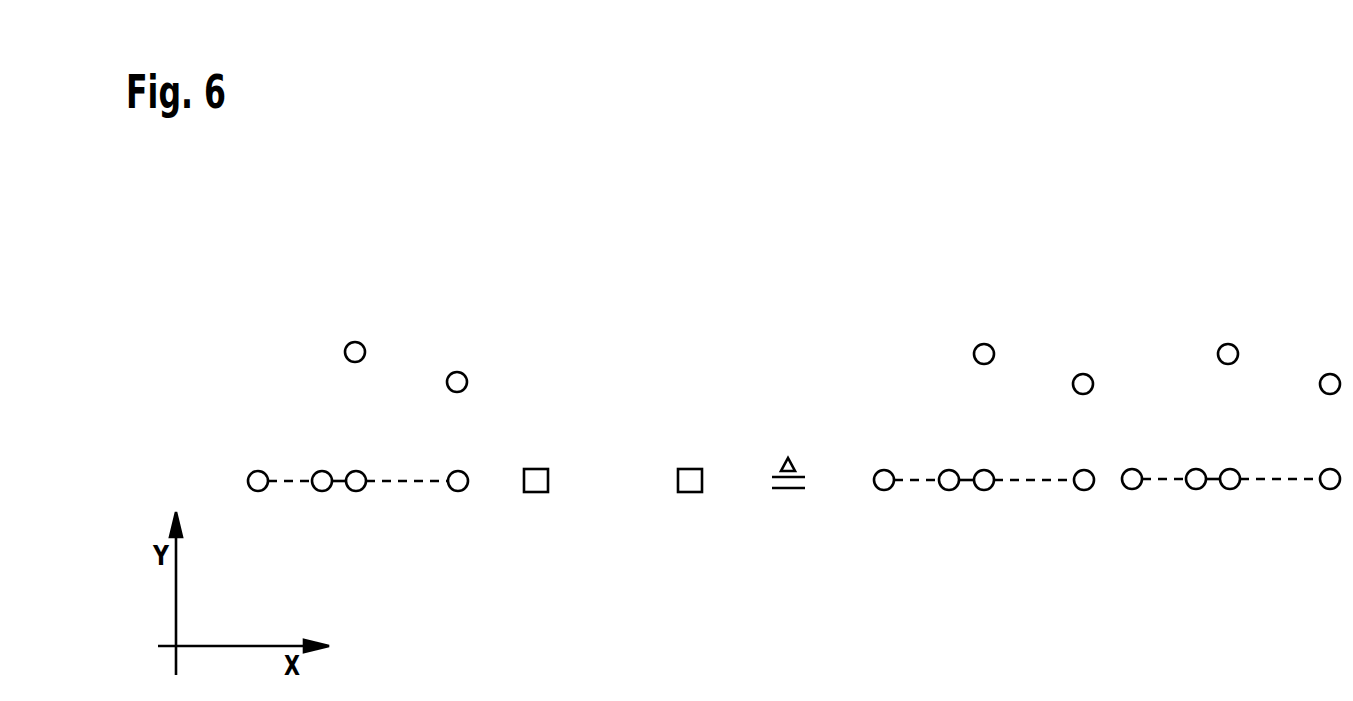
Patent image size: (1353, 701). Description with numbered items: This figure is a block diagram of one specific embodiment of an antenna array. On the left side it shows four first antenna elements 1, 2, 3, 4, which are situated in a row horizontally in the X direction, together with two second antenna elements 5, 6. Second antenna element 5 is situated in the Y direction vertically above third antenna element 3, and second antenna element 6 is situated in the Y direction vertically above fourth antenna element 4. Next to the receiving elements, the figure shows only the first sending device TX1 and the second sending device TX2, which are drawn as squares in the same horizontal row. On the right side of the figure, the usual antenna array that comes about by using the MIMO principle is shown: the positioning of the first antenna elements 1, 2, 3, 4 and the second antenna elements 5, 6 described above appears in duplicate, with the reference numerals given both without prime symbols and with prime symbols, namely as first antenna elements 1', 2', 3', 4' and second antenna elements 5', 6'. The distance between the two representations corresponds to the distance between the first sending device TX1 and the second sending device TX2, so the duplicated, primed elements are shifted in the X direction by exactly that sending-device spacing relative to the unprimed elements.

The first antenna element 1 is at (571, 522).
The first antenna element 2 is at (635, 522).
The third antenna element 3 is at (670, 522).
The fourth antenna element 4 is at (771, 522).
The second antenna element 5 is at (669, 302).
The second antenna element 6 is at (770, 332).
The first antenna element (duplicate representation) 1' is at (1134, 520).
The first antenna element (duplicate representation) 2' is at (1198, 520).
The third antenna element (duplicate representation) 3' is at (1232, 520).
The fourth antenna element (duplicate representation) 4' is at (1332, 520).
The second antenna element (duplicate representation) 5' is at (1230, 302).
The second antenna element (duplicate representation) 6' is at (1332, 332).
The first sending device TX1 is at (536, 492).
The second sending device TX2 is at (690, 492).